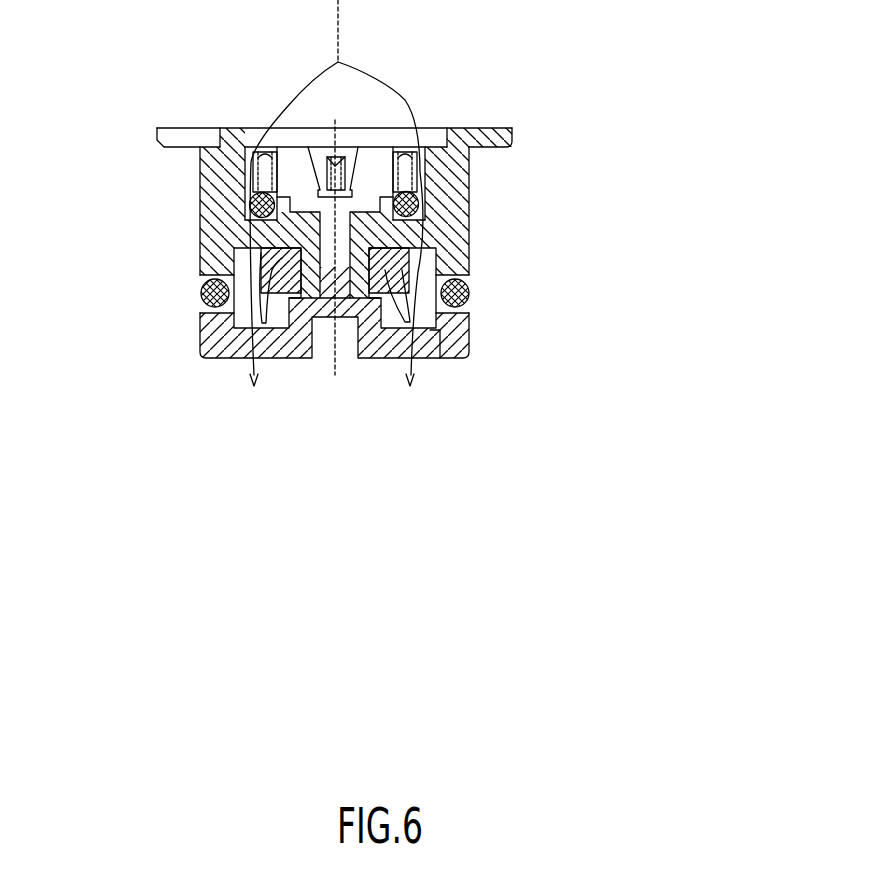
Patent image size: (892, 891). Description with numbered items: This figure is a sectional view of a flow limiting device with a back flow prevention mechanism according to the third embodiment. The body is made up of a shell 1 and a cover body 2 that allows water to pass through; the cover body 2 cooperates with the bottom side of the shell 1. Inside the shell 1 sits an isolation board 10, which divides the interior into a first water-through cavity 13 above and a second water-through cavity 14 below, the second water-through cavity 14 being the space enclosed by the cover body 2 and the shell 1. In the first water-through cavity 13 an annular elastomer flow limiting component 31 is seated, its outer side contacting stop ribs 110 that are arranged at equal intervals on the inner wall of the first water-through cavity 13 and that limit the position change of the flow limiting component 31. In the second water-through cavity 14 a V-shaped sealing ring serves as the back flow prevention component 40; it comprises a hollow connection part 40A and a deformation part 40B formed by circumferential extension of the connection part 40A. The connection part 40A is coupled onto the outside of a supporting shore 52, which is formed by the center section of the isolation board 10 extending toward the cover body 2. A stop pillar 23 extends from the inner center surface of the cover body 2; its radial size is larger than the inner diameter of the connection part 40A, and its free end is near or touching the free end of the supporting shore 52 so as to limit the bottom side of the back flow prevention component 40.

The shell 1 is at (251, 167).
The cover body 2 is at (232, 338).
The isolation board 10 is at (253, 220).
The first water-through cavity 13 is at (250, 163).
The second water-through cavity 14 is at (427, 318).
The stop pillar 23 is at (433, 358).
The flow limiting component 31 is at (420, 200).
The back flow prevention component 40 is at (667, 270).
The connection part 40A is at (400, 263).
The deformation part 40B is at (407, 308).
The supporting shore 52 is at (240, 267).
The stop ribs 110 is at (405, 173).